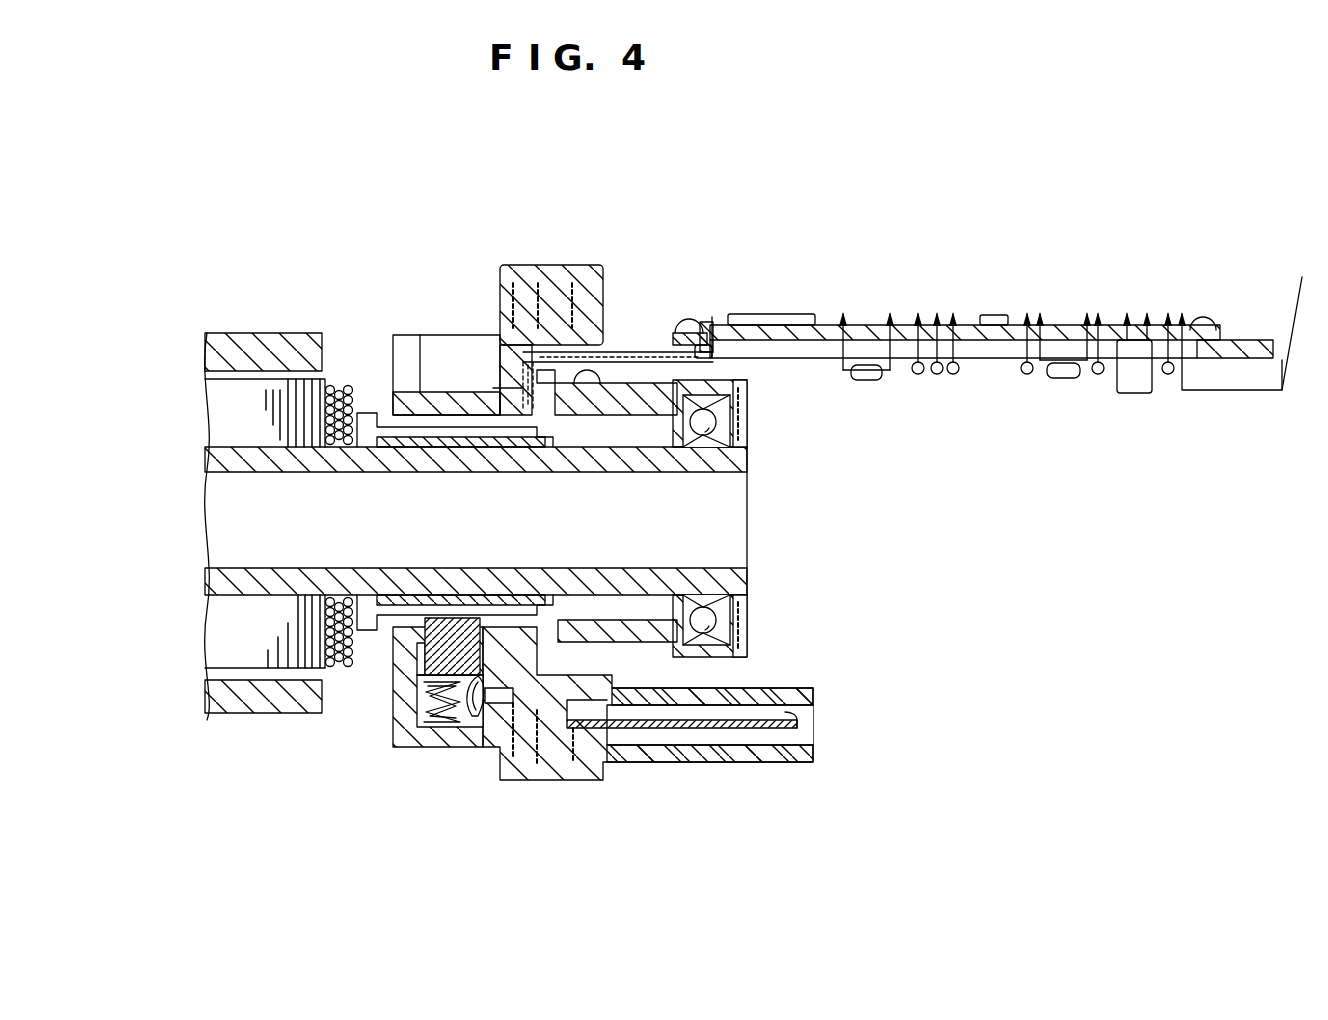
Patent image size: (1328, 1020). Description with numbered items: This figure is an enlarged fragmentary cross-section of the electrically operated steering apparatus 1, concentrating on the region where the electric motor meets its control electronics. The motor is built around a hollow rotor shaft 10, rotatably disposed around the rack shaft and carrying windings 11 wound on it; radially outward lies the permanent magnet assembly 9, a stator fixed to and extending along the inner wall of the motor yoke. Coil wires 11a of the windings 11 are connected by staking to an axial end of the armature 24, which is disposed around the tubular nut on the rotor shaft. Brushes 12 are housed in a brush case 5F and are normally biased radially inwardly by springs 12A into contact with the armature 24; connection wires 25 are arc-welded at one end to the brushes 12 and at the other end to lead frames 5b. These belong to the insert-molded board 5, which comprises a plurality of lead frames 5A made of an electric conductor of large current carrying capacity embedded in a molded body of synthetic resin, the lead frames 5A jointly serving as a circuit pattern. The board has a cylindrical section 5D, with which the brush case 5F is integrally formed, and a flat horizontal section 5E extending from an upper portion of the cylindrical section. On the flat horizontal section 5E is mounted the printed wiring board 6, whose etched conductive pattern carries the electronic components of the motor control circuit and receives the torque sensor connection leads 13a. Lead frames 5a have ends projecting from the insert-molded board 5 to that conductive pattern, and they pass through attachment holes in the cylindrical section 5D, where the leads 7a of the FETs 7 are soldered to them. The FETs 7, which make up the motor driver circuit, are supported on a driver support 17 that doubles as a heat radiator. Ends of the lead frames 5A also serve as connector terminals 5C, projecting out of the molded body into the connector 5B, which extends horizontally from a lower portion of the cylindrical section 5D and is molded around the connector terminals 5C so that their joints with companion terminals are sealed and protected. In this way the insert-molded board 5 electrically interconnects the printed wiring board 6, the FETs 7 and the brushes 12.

The motor assembly 1 is at (815, 215).
The insert-molded board 5 is at (565, 278).
The lead frames 5a is at (650, 345).
The lead frames 5A is at (690, 762).
The connector 5B is at (790, 688).
The connector terminals 5C is at (800, 715).
The cylindrical section 5D is at (600, 778).
The flat horizontal section 5E is at (620, 395).
The brush case 5F is at (400, 747).
The lead frames 5b is at (522, 778).
The printed wiring board 6 is at (870, 330).
The FETs 7 is at (640, 360).
The leads 7a is at (492, 380).
The permanent magnet assembly 9 is at (232, 705).
The rotor shaft 10 is at (240, 640).
The windings 11 is at (345, 378).
The coil bobbin plate 11a is at (392, 632).
The brushes 12 is at (393, 628).
The springs 12A is at (437, 747).
The torque sensor connection leads 13a is at (1237, 390).
The driver support 17 is at (722, 378).
The armature 24 is at (372, 622).
The connection wires 25 is at (470, 730).